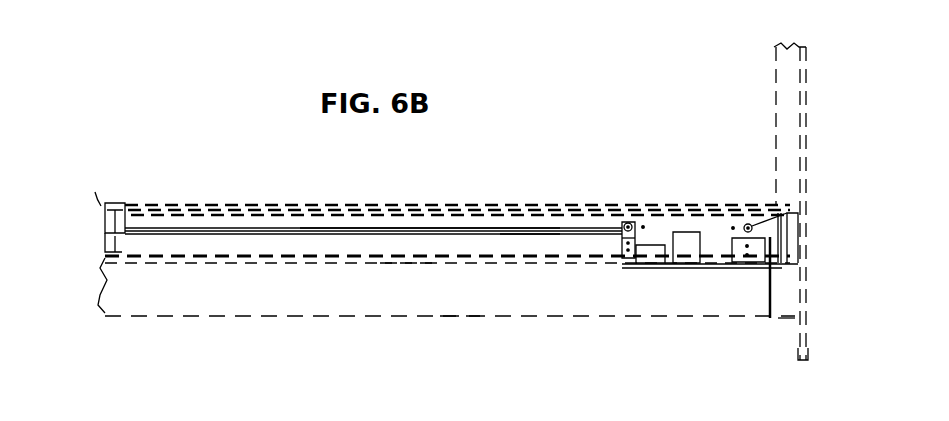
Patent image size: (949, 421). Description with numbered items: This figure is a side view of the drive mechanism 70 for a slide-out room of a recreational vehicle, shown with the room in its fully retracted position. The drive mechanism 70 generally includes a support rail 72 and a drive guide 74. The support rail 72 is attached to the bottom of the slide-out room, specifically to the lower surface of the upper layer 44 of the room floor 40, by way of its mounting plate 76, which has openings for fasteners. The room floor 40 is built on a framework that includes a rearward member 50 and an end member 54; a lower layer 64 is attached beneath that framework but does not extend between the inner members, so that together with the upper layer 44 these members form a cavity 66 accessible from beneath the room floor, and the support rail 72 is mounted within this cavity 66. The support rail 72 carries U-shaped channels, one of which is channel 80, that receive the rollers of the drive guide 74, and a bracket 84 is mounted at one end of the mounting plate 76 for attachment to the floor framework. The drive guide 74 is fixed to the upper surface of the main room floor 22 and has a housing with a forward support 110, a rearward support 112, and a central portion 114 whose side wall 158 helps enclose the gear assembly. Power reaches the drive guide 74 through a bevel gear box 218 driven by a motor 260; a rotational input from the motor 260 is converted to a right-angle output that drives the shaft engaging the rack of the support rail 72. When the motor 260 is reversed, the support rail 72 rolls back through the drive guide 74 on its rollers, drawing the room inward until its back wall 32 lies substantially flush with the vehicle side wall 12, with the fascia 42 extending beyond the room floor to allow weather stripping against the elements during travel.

The drive mechanism 70 is at (505, 91).
The drive guide 74 is at (722, 90).
The upper layer 44 is at (480, 205).
The support rail 72 is at (197, 217).
The mounting plate 76 is at (540, 208).
The rearward member 50 is at (98, 196).
The end member 54 is at (310, 240).
The floor 40 is at (226, 243).
The floor 22 is at (308, 315).
The U-shaped channel 80 is at (410, 328).
The lower layer 64 is at (452, 260).
The cavity 66 is at (527, 243).
The rearward support 112 is at (622, 245).
The central portion 114 is at (655, 218).
The side wall 158 is at (667, 228).
The motor 260 is at (664, 268).
The bevel gear box 218 is at (697, 268).
The forward support 110 is at (787, 212).
The bracket 84 is at (798, 233).
The side wall 12 is at (787, 97).
The back wall 32 is at (808, 130).
The fascia 42 is at (805, 346).